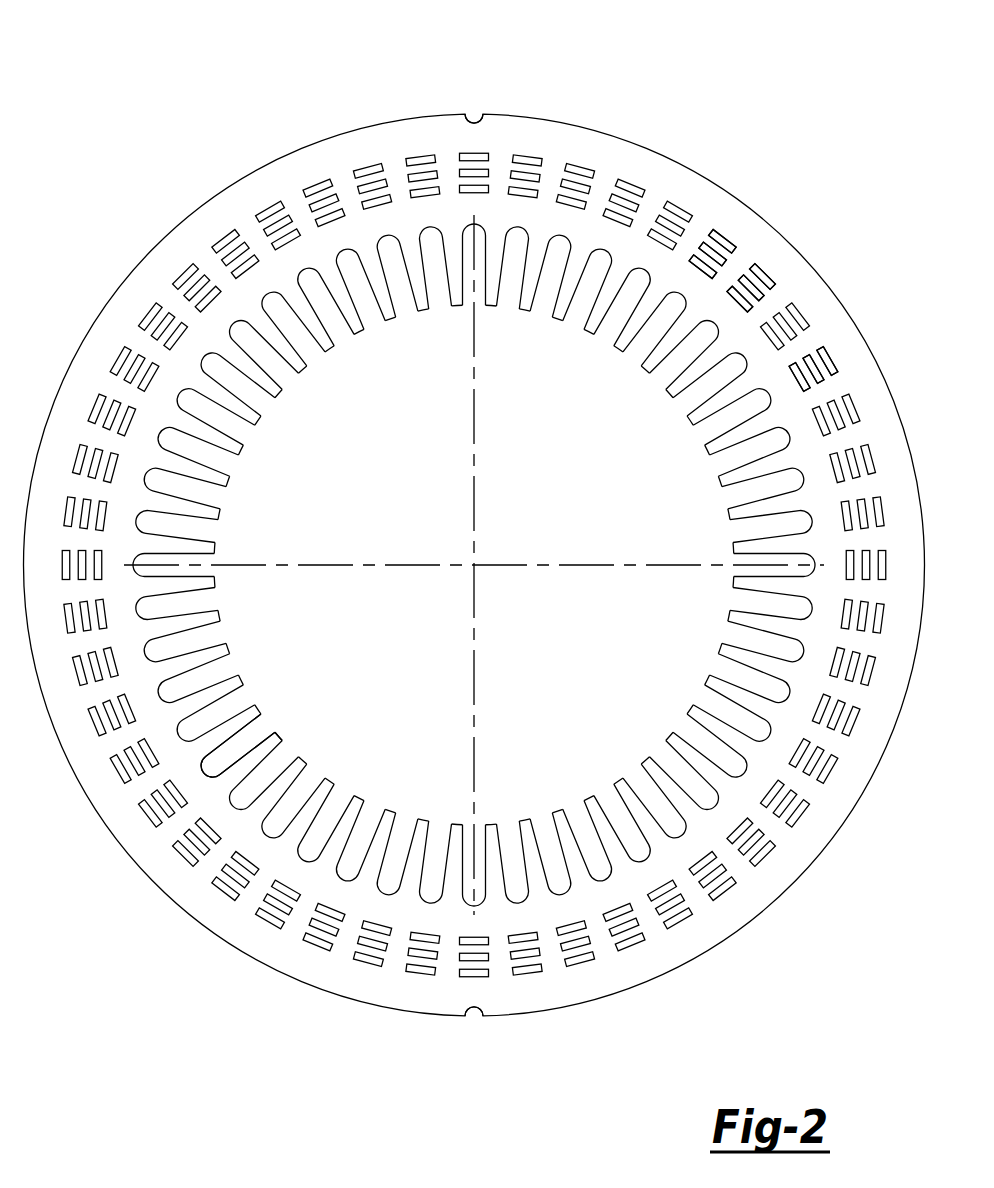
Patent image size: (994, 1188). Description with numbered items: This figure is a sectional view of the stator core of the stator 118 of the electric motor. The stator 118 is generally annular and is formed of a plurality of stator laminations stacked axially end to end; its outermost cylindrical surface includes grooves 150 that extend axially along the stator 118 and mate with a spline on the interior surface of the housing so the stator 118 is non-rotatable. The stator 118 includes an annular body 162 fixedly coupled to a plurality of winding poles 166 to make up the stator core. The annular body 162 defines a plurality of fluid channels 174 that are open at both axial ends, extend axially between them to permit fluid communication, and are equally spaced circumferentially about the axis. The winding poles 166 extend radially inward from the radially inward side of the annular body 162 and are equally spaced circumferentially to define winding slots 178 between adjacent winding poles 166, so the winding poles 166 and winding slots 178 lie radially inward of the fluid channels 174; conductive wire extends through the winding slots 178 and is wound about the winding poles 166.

The stator 118 is at (830, 843).
The grooves 150 is at (471, 114).
The annular body 162 is at (738, 261).
The winding poles 166 is at (264, 748).
The fluid channels 174 is at (830, 361).
The winding slots 178 is at (213, 763).